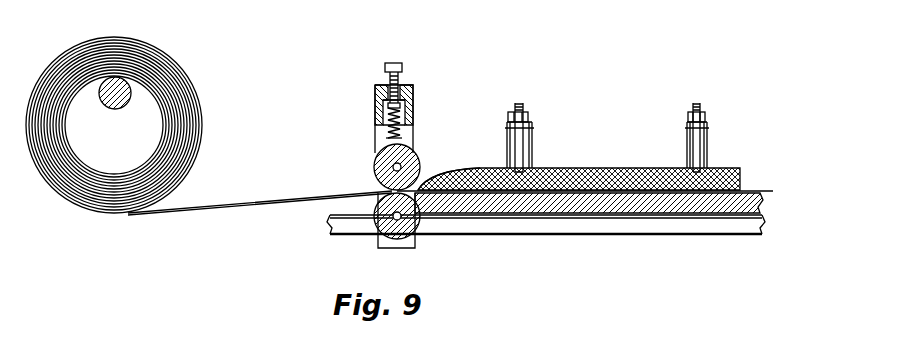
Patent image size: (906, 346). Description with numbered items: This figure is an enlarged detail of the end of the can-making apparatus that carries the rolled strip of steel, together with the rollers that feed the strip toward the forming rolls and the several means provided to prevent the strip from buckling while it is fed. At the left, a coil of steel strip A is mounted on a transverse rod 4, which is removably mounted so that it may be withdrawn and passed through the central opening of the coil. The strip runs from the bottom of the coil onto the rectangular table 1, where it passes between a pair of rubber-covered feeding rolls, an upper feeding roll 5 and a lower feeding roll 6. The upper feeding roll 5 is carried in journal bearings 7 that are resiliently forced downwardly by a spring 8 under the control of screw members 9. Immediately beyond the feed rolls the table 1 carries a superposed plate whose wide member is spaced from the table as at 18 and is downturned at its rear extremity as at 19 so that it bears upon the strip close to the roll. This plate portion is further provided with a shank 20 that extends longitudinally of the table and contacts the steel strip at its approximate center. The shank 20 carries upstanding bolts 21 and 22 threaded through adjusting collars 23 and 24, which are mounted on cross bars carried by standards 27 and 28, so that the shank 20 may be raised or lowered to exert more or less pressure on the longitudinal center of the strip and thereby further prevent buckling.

The coil of steel strip A is at (163, 78).
The transverse rod 4 is at (115, 100).
The rectangular table 1 is at (632, 238).
The space between plate and table 18 is at (490, 196).
The shank 20 is at (593, 177).
The downturned rear extremity 19 is at (423, 178).
The spring 8 is at (376, 118).
The screw members 9 is at (385, 73).
The journal bearings 7 is at (394, 140).
The upper feeding roll 5 is at (374, 172).
The lower feeding roll 6 is at (377, 236).
The upstanding bolt 21 is at (510, 142).
The standard 27 is at (525, 147).
The adjusting collar 23 is at (526, 113).
The standard 28 is at (689, 143).
The upstanding bolt 22 is at (706, 134).
The adjusting collar 24 is at (702, 113).